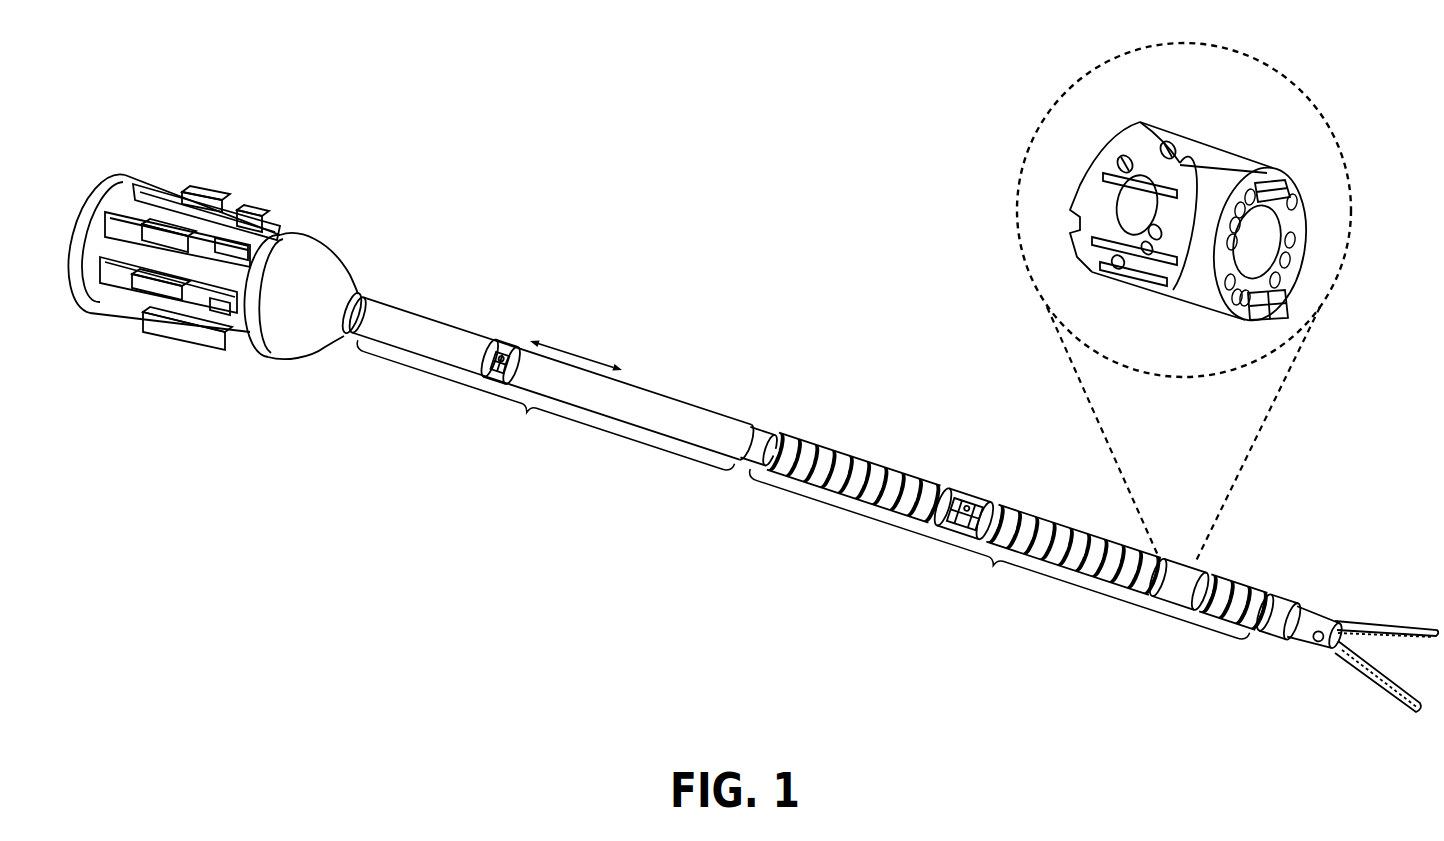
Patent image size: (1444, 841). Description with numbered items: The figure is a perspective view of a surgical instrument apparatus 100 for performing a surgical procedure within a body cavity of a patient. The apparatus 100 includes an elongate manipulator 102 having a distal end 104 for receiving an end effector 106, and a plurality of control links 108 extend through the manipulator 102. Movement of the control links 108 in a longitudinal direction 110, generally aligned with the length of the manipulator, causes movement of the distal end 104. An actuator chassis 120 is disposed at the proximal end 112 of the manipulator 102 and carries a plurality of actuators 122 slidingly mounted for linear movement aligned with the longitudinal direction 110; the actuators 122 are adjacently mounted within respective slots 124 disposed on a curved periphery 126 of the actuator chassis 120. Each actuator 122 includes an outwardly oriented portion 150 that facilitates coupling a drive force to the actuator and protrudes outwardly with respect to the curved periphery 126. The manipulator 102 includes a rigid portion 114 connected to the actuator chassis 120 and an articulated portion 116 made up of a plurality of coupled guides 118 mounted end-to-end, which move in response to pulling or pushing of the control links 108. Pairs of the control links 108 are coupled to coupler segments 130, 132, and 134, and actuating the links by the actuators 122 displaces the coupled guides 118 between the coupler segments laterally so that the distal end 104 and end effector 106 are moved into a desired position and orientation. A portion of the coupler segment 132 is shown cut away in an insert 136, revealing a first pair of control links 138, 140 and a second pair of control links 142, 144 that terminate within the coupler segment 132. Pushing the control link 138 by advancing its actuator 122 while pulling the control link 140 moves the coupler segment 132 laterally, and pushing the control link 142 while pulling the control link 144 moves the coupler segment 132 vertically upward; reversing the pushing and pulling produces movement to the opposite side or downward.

The surgical instrument apparatus 100 is at (441, 562).
The elongate manipulator 102 is at (728, 314).
The distal end 104 is at (1298, 604).
The end effector 106 is at (1302, 632).
The control links 108 is at (503, 344).
The longitudinal direction 110 is at (577, 352).
The proximal end 112 is at (382, 304).
The rigid portion 114 is at (537, 431).
The articulated portion 116 is at (991, 579).
The coupled guides 118 is at (814, 444).
The actuator chassis 120 is at (145, 153).
The actuators 122 is at (163, 229).
The slots 124 is at (127, 231).
The curved periphery 126 is at (240, 320).
The coupler segment 130 is at (998, 476).
The coupler segment 132 is at (1166, 564).
The coupler segment 134 is at (1274, 596).
The insert 136 is at (1016, 230).
The control link 138 is at (1167, 143).
The control link 140 is at (1120, 264).
The control link 142 is at (1127, 160).
The control link 144 is at (1153, 230).
The outwardly oriented portion 150 is at (240, 218).